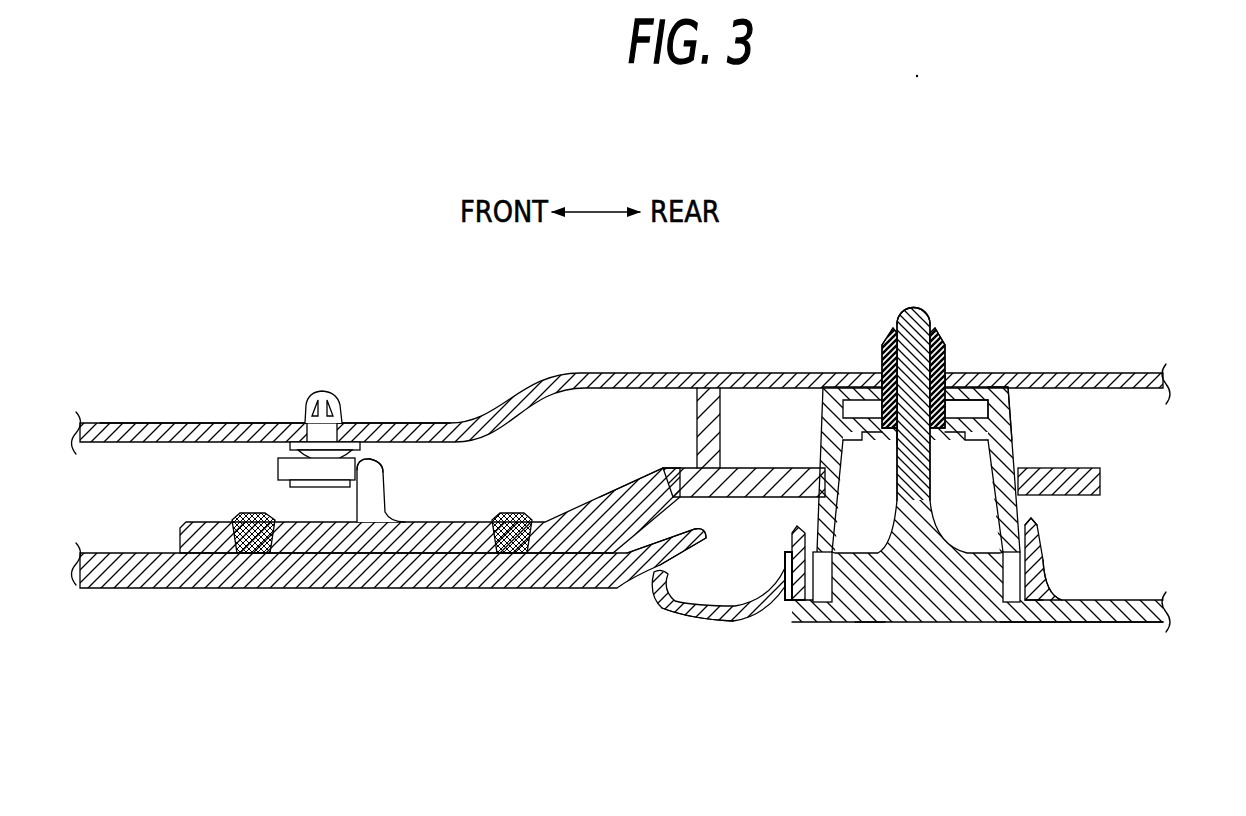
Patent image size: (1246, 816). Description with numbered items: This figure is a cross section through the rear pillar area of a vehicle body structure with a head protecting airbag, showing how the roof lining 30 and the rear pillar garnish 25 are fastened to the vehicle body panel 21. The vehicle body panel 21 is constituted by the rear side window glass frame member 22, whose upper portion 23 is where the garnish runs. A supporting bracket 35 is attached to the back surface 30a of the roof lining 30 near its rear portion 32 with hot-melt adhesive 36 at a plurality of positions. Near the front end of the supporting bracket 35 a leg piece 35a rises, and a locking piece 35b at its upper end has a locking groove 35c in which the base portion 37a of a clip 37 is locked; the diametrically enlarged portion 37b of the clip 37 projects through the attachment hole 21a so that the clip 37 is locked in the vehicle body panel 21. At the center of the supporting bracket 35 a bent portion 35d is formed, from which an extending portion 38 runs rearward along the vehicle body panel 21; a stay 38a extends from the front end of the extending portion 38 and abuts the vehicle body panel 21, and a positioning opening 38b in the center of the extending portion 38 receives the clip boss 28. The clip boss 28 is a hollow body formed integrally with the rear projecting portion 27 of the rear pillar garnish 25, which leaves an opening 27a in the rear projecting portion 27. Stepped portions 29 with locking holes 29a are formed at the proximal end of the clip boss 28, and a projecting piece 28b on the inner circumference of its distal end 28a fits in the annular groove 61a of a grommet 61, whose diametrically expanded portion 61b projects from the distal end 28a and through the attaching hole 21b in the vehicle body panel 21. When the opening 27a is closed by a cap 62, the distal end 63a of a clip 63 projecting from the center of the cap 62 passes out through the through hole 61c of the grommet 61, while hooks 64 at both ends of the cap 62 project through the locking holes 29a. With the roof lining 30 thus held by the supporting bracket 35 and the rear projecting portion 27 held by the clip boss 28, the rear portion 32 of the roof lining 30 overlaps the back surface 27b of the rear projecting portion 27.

The vehicle body panel 21 is at (1130, 366).
The attachment hole 21a is at (384, 423).
The attaching hole 21b is at (942, 372).
The rear side window glass frame member 22 is at (130, 423).
The upper portion 23 is at (182, 423).
The rear pillar garnish 25 is at (1153, 628).
The rear projecting portion 27 is at (1132, 622).
The opening 27a is at (1050, 622).
The back surface 27b is at (622, 590).
The clip boss 28 is at (1012, 433).
The distal end 28a is at (1000, 386).
The projecting piece 28b is at (978, 378).
The stepped portion 29 is at (790, 555).
The locking hole 29a is at (810, 603).
The roof lining 30 is at (355, 588).
The back surface 30a is at (437, 588).
The rear portion 32 is at (690, 618).
The supporting bracket 35 is at (600, 484).
The leg piece 35a is at (388, 497).
The locking piece 35b is at (395, 466).
The locking groove 35c is at (283, 458).
The bent portion 35d is at (636, 486).
The hot-melt adhesive 36 is at (240, 514).
The clip 37 is at (318, 386).
The base portion 37a is at (322, 465).
The diametrically enlarged portion 37b is at (340, 422).
The extending portion 38 is at (768, 466).
The stay 38a is at (722, 416).
The positioning opening 38b is at (868, 622).
The grommet 61 is at (907, 331).
The annular groove 61a is at (855, 385).
The diametrically expanded portion 61b is at (884, 345).
The through hole 61c is at (893, 440).
The cap 62 is at (935, 622).
The clip 63 is at (940, 448).
The distal end 63a is at (917, 310).
The hook 64 is at (792, 540).